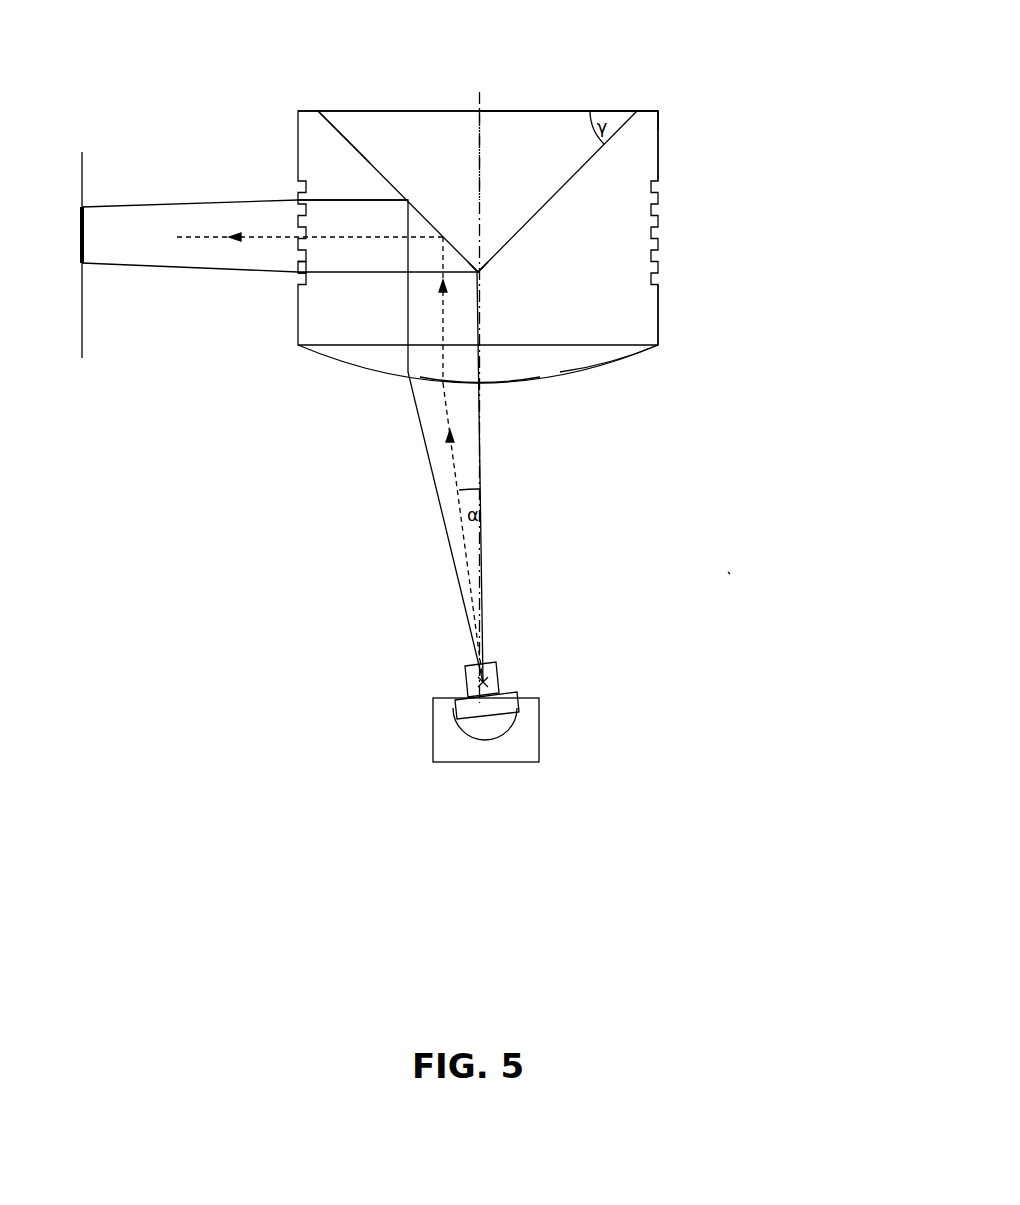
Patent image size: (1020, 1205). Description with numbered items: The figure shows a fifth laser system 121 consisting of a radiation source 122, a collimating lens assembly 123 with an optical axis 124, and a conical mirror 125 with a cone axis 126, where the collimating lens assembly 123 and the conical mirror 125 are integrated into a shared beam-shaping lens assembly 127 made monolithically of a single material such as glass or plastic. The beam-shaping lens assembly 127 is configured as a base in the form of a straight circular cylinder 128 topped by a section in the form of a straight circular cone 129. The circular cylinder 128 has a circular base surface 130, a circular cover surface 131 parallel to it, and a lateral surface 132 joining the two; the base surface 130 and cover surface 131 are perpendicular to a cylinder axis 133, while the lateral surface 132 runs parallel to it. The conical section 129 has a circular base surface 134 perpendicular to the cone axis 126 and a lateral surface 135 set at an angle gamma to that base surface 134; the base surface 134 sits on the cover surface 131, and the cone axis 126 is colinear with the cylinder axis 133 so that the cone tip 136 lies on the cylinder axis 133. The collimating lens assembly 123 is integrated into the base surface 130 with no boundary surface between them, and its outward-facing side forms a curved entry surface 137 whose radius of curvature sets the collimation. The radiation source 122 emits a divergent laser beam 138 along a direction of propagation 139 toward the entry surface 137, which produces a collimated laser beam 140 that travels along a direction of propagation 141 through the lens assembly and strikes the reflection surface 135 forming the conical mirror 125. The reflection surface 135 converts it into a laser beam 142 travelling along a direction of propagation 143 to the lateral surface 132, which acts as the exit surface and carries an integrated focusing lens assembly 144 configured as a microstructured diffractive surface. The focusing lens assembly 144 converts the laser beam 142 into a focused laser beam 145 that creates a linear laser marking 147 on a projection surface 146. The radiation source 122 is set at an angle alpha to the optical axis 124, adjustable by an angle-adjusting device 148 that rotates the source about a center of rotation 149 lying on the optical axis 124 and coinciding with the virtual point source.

The laser system 121 is at (728, 572).
The radiation source 122 is at (465, 680).
The collimating lens assembly 123 is at (717, 360).
The optical axis 124 is at (481, 363).
The conical mirror 125 is at (375, 155).
The cone axis 126 is at (481, 162).
The beam-shaping lens assembly 127 is at (752, 237).
The straight circular cylinder 128 is at (659, 313).
The straight circular cone 129 is at (453, 132).
The base surface 130 is at (612, 348).
The cover surface 131 is at (640, 111).
The lateral surface 132 is at (659, 147).
The cylinder axis 133 is at (481, 282).
The base surface 134 is at (555, 111).
The lateral surface 135 is at (580, 171).
The cone tip 136 is at (476, 262).
The curved entry surface 137 is at (512, 388).
The laser beam 138 is at (455, 565).
The direction of propagation 139 is at (455, 473).
The collimated laser beam 140 is at (481, 318).
The direction of propagation 141 is at (443, 308).
The laser beam 142 is at (313, 198).
The direction of propagation 143 is at (257, 237).
The focusing lens assembly 144 is at (296, 277).
The focused laser beam 145 is at (198, 203).
The projection surface 146 is at (83, 330).
The linear laser marking 147 is at (83, 237).
The angle-adjusting device 148 is at (410, 722).
The center of rotation 149 is at (500, 680).